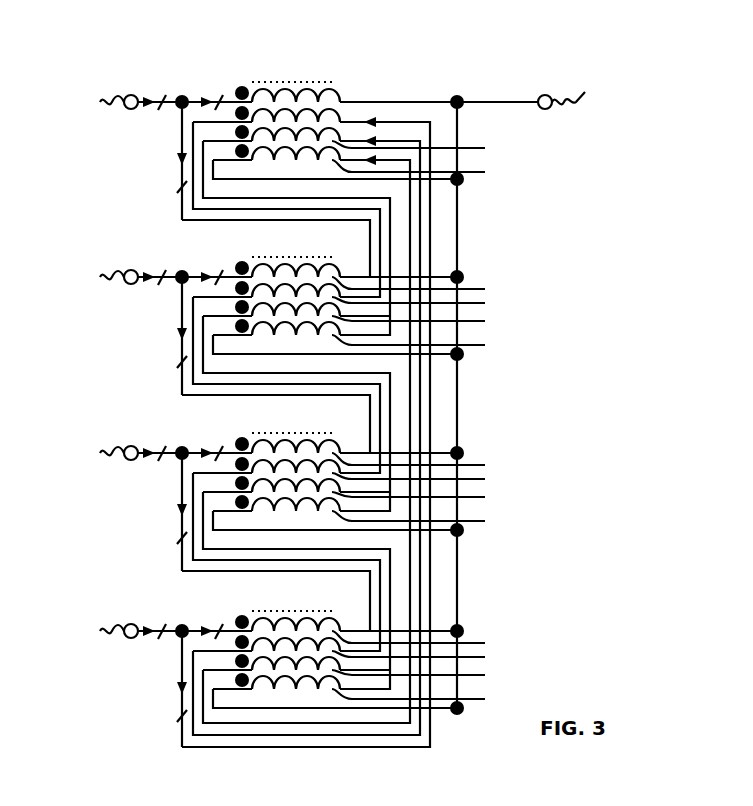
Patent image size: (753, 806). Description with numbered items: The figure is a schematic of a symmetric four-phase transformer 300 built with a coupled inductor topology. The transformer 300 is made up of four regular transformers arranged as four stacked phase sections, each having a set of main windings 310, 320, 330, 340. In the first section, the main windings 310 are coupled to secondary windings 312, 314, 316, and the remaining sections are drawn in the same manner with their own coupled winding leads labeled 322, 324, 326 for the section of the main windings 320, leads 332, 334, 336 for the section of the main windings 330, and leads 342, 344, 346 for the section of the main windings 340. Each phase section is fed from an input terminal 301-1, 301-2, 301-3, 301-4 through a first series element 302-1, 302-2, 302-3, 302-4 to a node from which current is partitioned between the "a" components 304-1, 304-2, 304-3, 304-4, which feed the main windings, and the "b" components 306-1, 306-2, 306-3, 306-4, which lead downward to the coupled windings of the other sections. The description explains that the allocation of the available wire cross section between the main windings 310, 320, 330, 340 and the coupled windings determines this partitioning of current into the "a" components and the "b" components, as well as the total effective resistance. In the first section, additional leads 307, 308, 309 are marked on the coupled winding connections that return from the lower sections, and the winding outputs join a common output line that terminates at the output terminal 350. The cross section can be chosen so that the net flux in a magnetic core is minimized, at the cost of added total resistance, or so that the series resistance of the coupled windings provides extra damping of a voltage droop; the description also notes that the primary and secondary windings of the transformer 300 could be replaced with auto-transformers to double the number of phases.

The symmetric four-phase transformer 300 is at (641, 524).
The input terminal phase 1 301-1 is at (90, 103).
The input terminal phase 2 301-2 is at (90, 278).
The input terminal phase 3 301-3 is at (90, 454).
The input terminal phase 4 301-4 is at (90, 632).
The high-side switch phase 1 302-1 is at (161, 89).
The high-side switch phase 2 302-2 is at (161, 264).
The high-side switch phase 3 302-3 is at (161, 440).
The high-side switch phase 4 302-4 is at (161, 618).
The "a" component 304-1 is at (218, 93).
The "a" component 304-2 is at (218, 268).
The "a" component 304-3 is at (218, 444).
The "a" component 304-4 is at (218, 622).
The "b" component 306-1 is at (155, 161).
The "b" component 306-2 is at (155, 336).
The "b" component 306-3 is at (155, 512).
The "b" component 306-4 is at (155, 689).
The fourth winding lead 307 is at (377, 159).
The third winding lead 308 is at (377, 140).
The second winding lead 309 is at (378, 120).
The main windings 310 is at (330, 83).
The secondary winding 312 is at (343, 95).
The secondary winding 314 is at (428, 148).
The secondary winding 316 is at (428, 172).
The main windings 320 is at (427, 289).
The winding tap 322 is at (427, 303).
The winding tap 324 is at (427, 321).
The winding tap 326 is at (427, 345).
The main windings 330 is at (427, 465).
The winding tap 332 is at (427, 479).
The winding tap 334 is at (427, 497).
The winding tap 336 is at (427, 521).
The main windings 340 is at (427, 643).
The winding tap 342 is at (427, 657).
The winding tap 344 is at (427, 675).
The winding tap 346 is at (427, 699).
The output terminal 350 is at (582, 90).